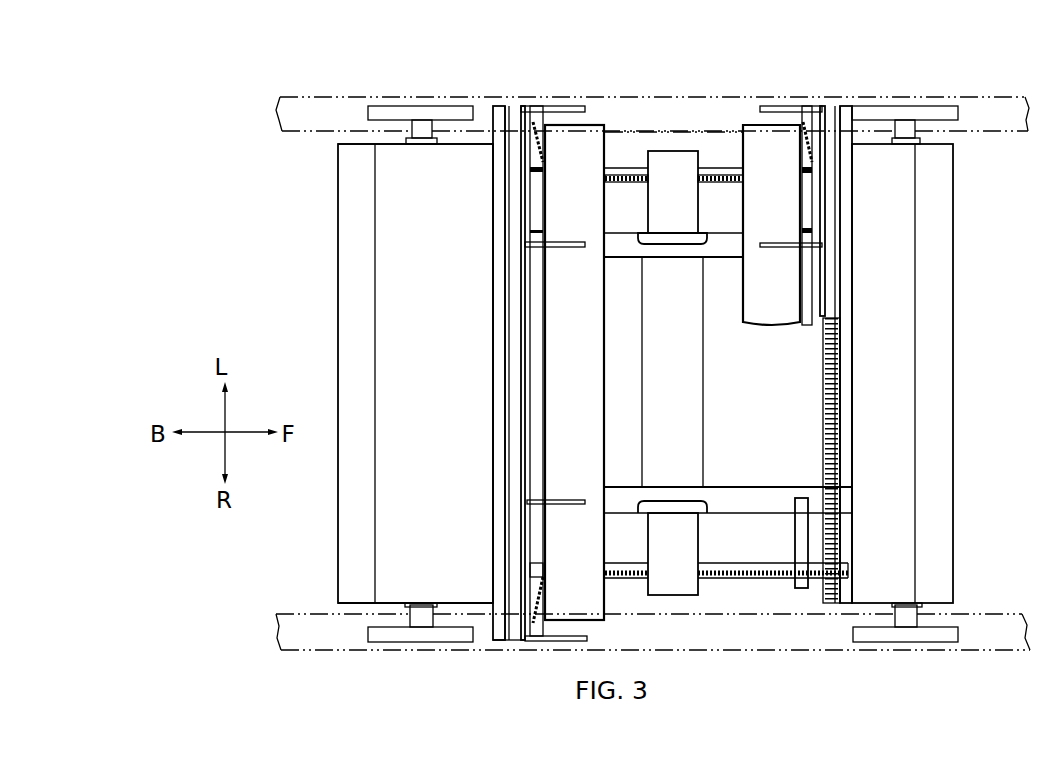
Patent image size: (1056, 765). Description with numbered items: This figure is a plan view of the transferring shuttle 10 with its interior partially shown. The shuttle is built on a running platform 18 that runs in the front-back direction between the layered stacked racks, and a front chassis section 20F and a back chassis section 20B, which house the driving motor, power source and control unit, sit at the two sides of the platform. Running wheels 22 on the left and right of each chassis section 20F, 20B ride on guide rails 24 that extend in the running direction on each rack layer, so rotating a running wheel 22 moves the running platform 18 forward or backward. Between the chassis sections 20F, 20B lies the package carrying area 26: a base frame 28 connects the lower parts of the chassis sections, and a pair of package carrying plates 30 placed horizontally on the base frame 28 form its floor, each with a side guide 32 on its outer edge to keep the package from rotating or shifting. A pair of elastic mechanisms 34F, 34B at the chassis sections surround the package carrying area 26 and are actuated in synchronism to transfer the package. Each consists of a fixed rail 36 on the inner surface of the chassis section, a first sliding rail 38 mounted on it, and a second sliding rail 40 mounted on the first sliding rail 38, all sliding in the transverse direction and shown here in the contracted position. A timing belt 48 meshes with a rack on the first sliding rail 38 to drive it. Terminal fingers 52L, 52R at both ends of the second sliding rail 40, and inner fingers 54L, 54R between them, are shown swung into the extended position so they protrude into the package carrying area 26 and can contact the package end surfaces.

The transferring shuttle 10 is at (323, 220).
The running platform 18 is at (338, 293).
The back chassis section 20B is at (360, 375).
The front chassis section 20F is at (932, 370).
The running wheel 22 is at (385, 111).
The guide rail 24 is at (295, 120).
The package carrying area 26 is at (605, 412).
The base frame 28 is at (743, 492).
The package carrying plate 30 is at (583, 390).
The side guide 32 is at (544, 200).
The back elastic mechanism 34B is at (530, 105).
The front elastic mechanism 34F is at (818, 105).
The fixed rail 36 is at (498, 157).
The first sliding rail 38 is at (517, 218).
The second sliding rail 40 is at (530, 316).
The timing belt 48 is at (838, 418).
The left terminal finger 52L is at (573, 105).
The right terminal finger 52R is at (560, 630).
The left inner finger 54L is at (565, 248).
The right inner finger 54R is at (558, 500).